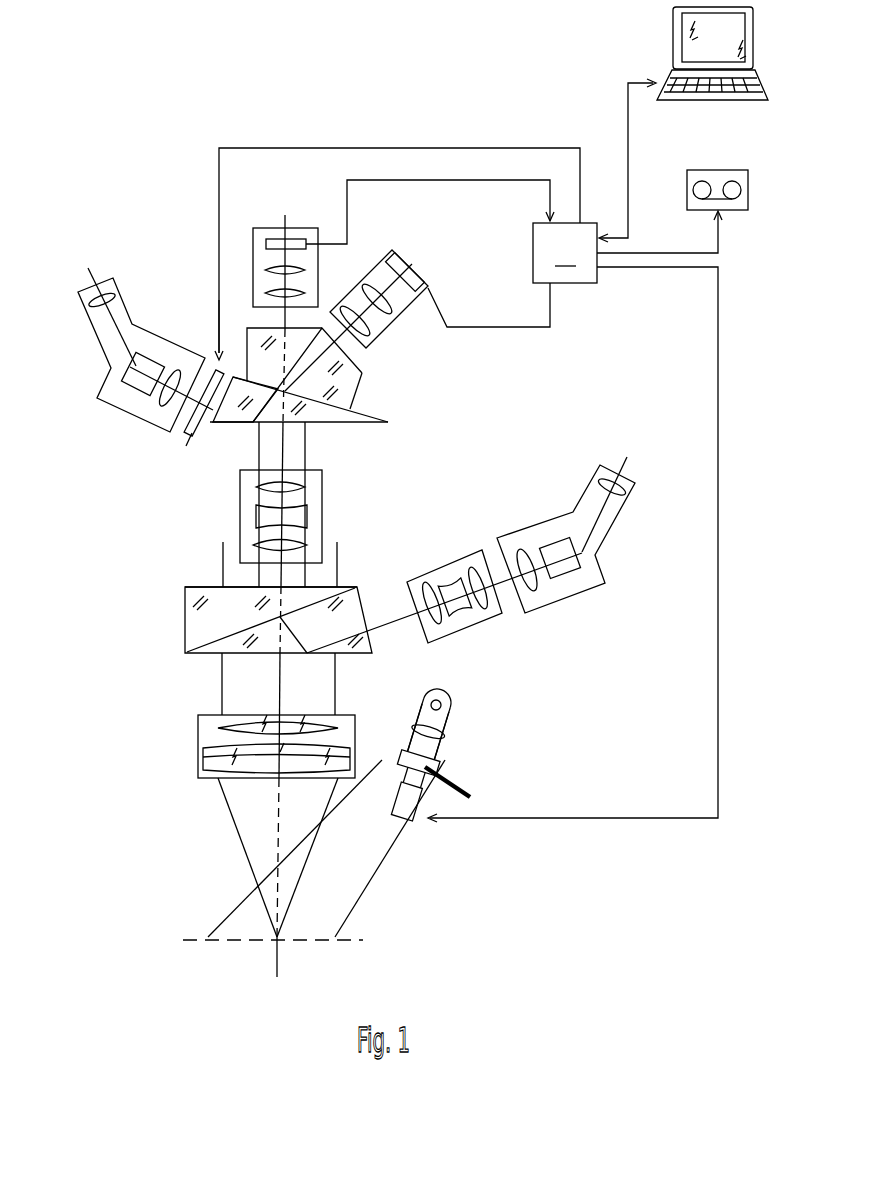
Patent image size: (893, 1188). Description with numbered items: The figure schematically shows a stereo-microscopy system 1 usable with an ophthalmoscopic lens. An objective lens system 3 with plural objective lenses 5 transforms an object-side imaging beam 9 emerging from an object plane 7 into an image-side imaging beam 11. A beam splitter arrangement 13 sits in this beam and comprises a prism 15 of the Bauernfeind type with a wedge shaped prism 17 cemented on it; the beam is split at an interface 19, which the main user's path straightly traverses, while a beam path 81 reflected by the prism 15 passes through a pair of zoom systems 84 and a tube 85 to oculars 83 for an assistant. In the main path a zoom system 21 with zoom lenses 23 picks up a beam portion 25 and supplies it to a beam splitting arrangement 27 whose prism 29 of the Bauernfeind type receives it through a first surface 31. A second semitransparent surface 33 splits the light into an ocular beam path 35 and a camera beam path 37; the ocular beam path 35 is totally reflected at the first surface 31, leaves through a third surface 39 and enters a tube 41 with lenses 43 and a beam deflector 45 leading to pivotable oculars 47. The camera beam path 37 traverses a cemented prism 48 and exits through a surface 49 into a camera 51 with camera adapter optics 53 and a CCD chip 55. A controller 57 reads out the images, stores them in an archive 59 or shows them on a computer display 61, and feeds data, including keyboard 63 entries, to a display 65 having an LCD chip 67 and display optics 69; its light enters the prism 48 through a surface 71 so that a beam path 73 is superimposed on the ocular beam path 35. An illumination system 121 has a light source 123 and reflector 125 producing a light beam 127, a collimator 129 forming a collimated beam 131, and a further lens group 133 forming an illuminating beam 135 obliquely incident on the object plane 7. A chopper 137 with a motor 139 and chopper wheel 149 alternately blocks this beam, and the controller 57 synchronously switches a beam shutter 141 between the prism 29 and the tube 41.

The microscopy system 1 is at (150, 143).
The objective lens system 3 is at (196, 778).
The objective lenses 5 is at (203, 727).
The object plane 7 is at (350, 942).
The object-side imaging beam 9 is at (235, 830).
The image-side imaging beam 11 is at (337, 555).
The beam splitter arrangement 13 is at (182, 627).
The prism of the Bauernfeind type 15 is at (370, 638).
The wedge shaped prism 17 is at (185, 600).
The interface 19 is at (220, 640).
The zoom system 21 is at (240, 515).
The zoom lenses 23 is at (305, 487).
The beam portion 25 is at (259, 450).
The beam splitting arrangement 27 is at (368, 397).
The prism of the Bauernfeind type 29 is at (378, 420).
The first surface 31 is at (373, 428).
The second semitransparent surface 33 is at (241, 375).
The ocular beam path 35 is at (276, 400).
The camera beam path 37 is at (290, 357).
The third surface 39 is at (207, 420).
The tube 41 is at (116, 406).
The lenses 43 is at (172, 368).
The beam deflector 45 is at (146, 356).
The oculars 47 is at (97, 306).
The prism 48 is at (363, 378).
The surface 49 is at (255, 326).
The camera 51 is at (258, 228).
The camera adapter optics 53 is at (305, 293).
The CCD chip 55 is at (295, 239).
The controller 57 is at (565, 253).
The archive 59 is at (718, 170).
The computer display 61 is at (673, 38).
The keyboard 63 is at (675, 104).
The display 65 is at (378, 257).
The LCD chip 67 is at (400, 262).
The display optics 69 is at (372, 320).
The surface 71 is at (350, 353).
The beam path of the display 73 is at (425, 300).
The beam path 81 is at (383, 607).
The oculars 83 is at (617, 493).
The zoom systems 84 is at (487, 625).
The tube 85 is at (584, 595).
The illumination system 121 is at (501, 737).
The light source 123 is at (445, 709).
The reflector 125 is at (453, 697).
The light beam 127 is at (433, 735).
The collimator 129 is at (408, 725).
The collimated beam 131 is at (428, 762).
The further lens group 133 is at (390, 778).
The illuminating beam 135 is at (375, 870).
The chopper 137 is at (478, 827).
The motor 139 is at (423, 822).
The beam shutter 141 is at (188, 444).
The chopper wheel 149 is at (472, 797).